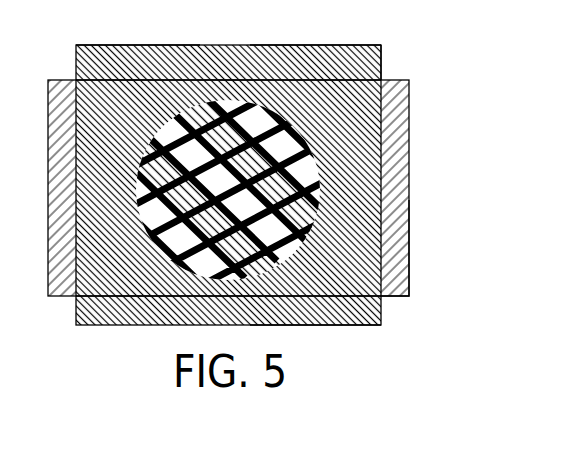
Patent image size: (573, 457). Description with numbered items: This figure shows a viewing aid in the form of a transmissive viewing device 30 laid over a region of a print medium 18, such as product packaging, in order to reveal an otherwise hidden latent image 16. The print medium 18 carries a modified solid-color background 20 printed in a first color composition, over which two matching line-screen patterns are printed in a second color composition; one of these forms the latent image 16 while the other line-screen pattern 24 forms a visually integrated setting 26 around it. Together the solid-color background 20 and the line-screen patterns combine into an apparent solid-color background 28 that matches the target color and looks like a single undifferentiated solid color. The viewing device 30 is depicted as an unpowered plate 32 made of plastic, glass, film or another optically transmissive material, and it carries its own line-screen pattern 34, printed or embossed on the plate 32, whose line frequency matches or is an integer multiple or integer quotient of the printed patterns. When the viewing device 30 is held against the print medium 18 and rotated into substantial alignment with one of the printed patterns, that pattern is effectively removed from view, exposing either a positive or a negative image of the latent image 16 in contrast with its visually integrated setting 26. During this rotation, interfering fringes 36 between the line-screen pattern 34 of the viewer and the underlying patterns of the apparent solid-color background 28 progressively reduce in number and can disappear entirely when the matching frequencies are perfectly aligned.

The latent image 16 is at (197, 43).
The print medium 18 is at (73, 312).
The solid-color background 20 is at (368, 326).
The line-screen pattern 24 is at (113, 44).
The visually integrated setting 26 is at (306, 43).
The apparent solid-color background 28 is at (383, 60).
The viewing device 30 is at (43, 97).
The plate 32 is at (410, 278).
The line-screen pattern 34 is at (400, 148).
The interfering fringes 36 is at (175, 250).